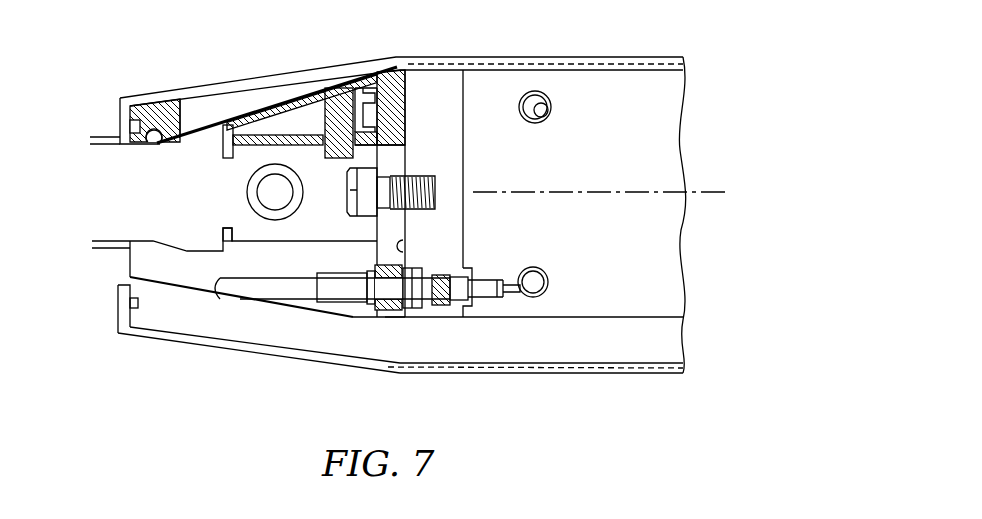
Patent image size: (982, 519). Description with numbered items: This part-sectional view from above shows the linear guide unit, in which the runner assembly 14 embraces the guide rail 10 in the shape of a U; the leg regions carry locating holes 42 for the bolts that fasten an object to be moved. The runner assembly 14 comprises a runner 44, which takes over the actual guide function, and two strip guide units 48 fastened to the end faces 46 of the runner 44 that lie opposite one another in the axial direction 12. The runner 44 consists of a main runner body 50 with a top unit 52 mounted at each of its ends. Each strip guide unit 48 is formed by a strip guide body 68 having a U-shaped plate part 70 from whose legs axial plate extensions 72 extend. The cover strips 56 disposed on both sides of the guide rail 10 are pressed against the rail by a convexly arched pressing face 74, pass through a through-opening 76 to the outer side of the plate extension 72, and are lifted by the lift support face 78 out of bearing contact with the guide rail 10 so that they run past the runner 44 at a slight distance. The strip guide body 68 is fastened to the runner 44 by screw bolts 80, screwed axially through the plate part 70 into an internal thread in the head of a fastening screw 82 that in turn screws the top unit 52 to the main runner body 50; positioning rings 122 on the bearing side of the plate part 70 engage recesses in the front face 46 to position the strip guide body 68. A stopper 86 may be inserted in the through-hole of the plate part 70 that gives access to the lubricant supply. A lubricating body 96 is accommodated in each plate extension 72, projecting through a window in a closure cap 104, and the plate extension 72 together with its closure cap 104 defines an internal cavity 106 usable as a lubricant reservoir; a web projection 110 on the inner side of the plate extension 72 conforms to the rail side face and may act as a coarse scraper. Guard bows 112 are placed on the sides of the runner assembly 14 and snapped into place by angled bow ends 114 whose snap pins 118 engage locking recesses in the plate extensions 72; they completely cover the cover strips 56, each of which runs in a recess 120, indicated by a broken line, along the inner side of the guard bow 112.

The guide rail 10 is at (99, 134).
The axial direction 12 is at (711, 195).
The runner assembly 14 is at (627, 57).
The locating holes 42 is at (538, 123).
The runner 44 is at (666, 139).
The end faces 46 is at (405, 248).
The strip guide units 48 is at (405, 128).
The main runner body 50 is at (664, 288).
The top unit 52 is at (437, 311).
The cover strips 56 is at (98, 146).
The strip guide body 68 is at (406, 160).
The plate part 70 is at (398, 220).
The plate extensions 72 is at (187, 103).
The pressing face 74 is at (160, 144).
The through-opening 76 is at (207, 125).
The lift support face 78 is at (400, 103).
The screw bolts 80 is at (367, 306).
The fastening screw 82 is at (483, 283).
The stopper 86 is at (363, 228).
The lubricating body 96 is at (340, 90).
The closure cap 104 is at (243, 122).
The internal cavity 106 is at (303, 120).
The web projection 110 is at (206, 228).
The guard bows 112 is at (263, 356).
The angled bow ends 114 is at (118, 305).
The snap pins 118 is at (138, 310).
The recess 120 is at (532, 364).
The positioning rings 122 is at (412, 320).